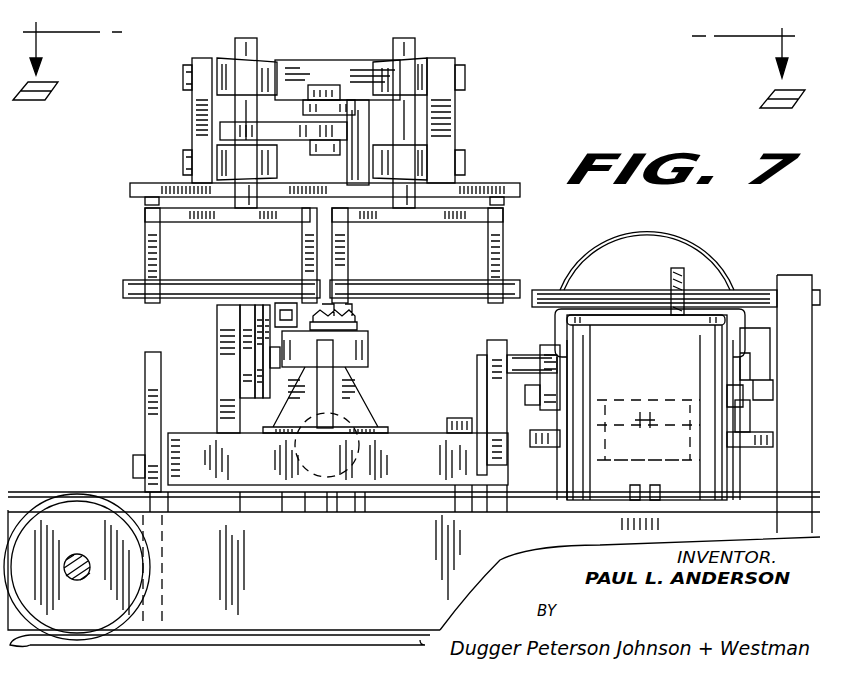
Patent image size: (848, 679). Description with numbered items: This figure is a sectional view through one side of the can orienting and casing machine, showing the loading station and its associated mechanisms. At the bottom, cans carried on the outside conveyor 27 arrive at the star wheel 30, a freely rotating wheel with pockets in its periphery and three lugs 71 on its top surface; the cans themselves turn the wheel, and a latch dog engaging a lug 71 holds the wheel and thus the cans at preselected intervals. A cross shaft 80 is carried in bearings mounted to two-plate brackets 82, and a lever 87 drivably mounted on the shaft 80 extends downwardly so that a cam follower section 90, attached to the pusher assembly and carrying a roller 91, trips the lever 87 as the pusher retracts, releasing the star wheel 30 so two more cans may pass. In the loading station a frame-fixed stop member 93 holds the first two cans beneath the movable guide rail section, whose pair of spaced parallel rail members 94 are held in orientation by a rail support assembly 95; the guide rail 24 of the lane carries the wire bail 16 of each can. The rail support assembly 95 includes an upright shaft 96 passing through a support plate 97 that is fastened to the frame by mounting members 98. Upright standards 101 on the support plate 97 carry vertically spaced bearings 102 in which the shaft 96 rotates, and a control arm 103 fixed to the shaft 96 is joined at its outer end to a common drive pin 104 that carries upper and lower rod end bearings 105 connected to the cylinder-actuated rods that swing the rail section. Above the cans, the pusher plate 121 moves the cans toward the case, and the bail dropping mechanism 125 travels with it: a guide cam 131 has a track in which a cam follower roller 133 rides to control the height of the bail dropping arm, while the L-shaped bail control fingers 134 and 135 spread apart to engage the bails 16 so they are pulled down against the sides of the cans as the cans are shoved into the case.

The bail 16 is at (695, 248).
The guide rail 24 is at (610, 296).
The outside conveyor 27 is at (252, 645).
The star wheel 30 is at (552, 447).
The lug 71 is at (755, 432).
The cross shaft 80 is at (521, 357).
The bracket 82 is at (545, 400).
The lever 87 is at (487, 375).
The cam follower section 90 is at (447, 428).
The roller 91 is at (477, 392).
The stop member 93 is at (133, 462).
The rail member 94 is at (125, 286).
The rail support assembly 95 is at (148, 248).
The shaft 96 is at (245, 38).
The support plate 97 is at (155, 183).
The mounting member 98 is at (145, 200).
The upright standard 101 is at (210, 45).
The bearing 102 is at (217, 62).
The control arm 103 is at (300, 125).
The drive pin 104 is at (330, 85).
The rod end bearing 105 is at (318, 155).
The pusher plate 121 is at (425, 485).
The bail dropping mechanism 125 is at (200, 316).
The guide cam 131 is at (253, 398).
The cam follower roller 133 is at (265, 350).
The bail control finger 134 is at (340, 322).
The bail control finger 135 is at (305, 305).